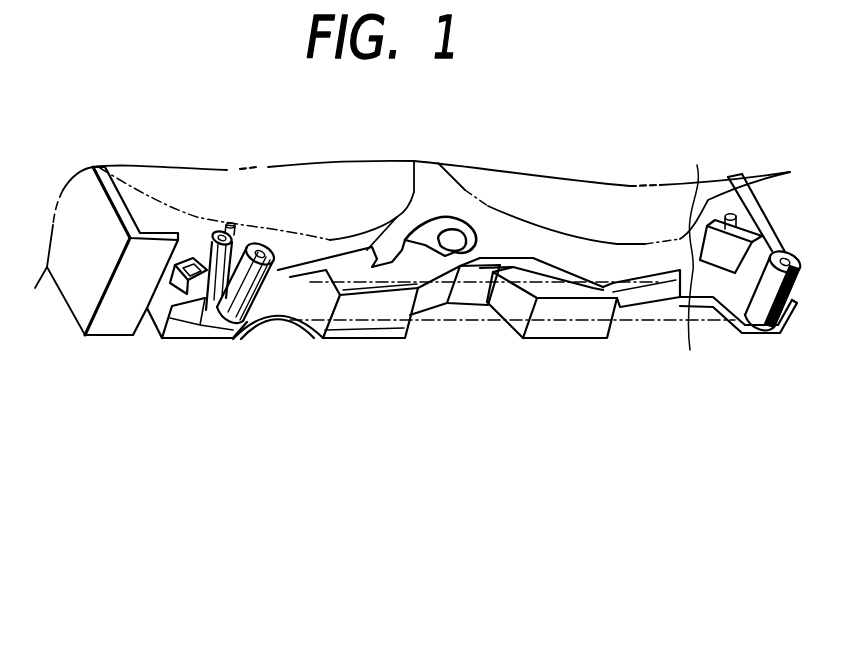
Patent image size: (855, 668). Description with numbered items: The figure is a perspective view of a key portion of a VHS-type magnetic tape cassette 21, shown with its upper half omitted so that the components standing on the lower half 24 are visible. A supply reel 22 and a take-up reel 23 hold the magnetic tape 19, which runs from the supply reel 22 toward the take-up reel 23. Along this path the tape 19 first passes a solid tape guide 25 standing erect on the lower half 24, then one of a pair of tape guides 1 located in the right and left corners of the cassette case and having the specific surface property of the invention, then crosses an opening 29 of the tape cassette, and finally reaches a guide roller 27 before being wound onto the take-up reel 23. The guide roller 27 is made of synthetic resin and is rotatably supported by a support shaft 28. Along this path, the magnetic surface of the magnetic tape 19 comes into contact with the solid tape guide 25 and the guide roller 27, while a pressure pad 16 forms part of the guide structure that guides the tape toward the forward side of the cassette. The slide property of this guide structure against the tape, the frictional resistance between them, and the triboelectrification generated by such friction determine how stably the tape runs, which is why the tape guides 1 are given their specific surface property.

The tape guide 1 is at (278, 252).
The pressure pad 16 is at (693, 300).
The magnetic tape 19 is at (640, 317).
The magnetic tape cassette 21 is at (451, 134).
The supply reel 22 is at (602, 204).
The take-up reel 23 is at (312, 188).
The lower half 24 is at (722, 200).
The solid tape guide 25 is at (745, 197).
The guide roller 27 is at (198, 228).
The support shaft 28 is at (238, 230).
The opening 29 is at (97, 383).